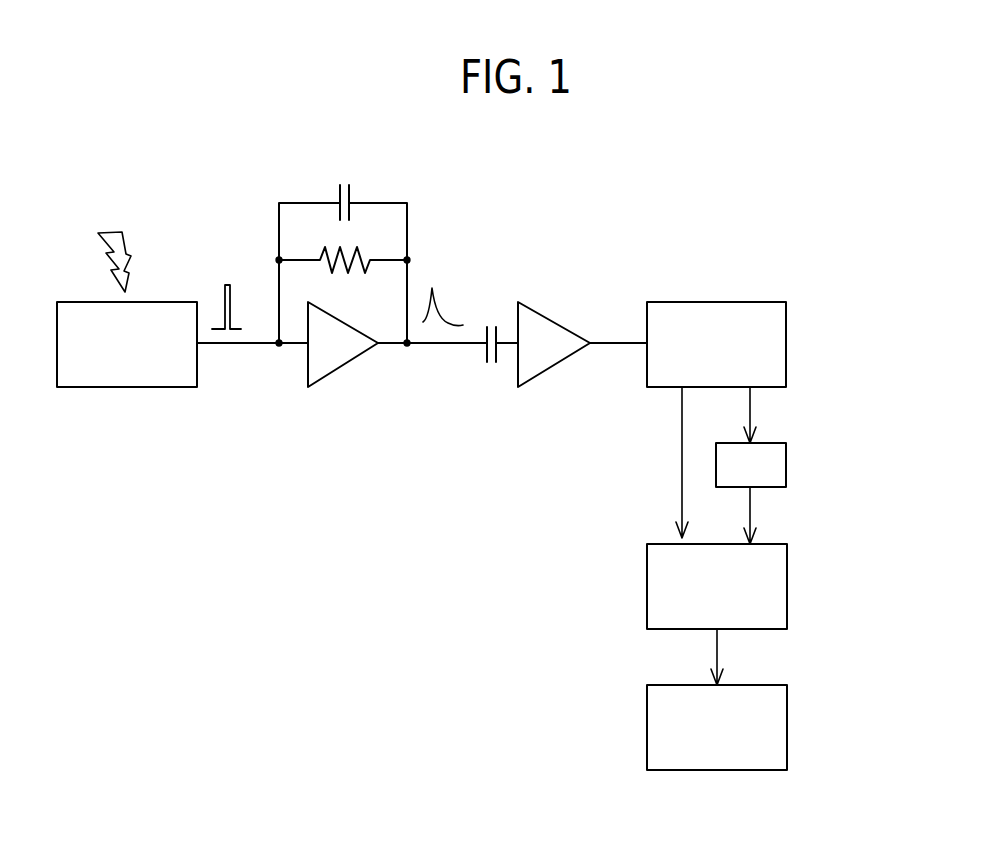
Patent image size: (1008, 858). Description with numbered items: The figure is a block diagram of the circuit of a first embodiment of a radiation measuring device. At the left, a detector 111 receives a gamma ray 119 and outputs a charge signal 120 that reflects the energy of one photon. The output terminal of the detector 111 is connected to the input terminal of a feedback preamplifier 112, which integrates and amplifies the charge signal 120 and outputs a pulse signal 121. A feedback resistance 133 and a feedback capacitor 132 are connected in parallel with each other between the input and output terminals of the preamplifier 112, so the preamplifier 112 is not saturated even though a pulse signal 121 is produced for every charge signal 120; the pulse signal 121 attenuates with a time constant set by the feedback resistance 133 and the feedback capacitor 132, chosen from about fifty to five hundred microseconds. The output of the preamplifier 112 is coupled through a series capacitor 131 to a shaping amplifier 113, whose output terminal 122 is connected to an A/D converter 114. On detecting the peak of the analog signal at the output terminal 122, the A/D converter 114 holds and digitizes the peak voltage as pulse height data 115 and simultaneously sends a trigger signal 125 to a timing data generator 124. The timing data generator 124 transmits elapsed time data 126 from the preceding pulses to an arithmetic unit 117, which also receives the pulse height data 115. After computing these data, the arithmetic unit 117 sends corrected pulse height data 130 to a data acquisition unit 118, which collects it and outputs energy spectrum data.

The detector 111 is at (145, 389).
The gamma ray 119 is at (113, 233).
The charge signal 120 is at (228, 282).
The preamplifier 112 is at (340, 373).
The feedback capacitor 132 is at (345, 182).
The feedback resistance 133 is at (360, 247).
The pulse signal 121 is at (442, 293).
The capacitor 131 is at (490, 365).
The shaping amplifier 113 is at (548, 370).
The output terminal 122 is at (608, 342).
The A/D converter 114 is at (787, 328).
The pulse height data 115 is at (680, 478).
The trigger signal 125 is at (752, 408).
The timing data generator 124 is at (787, 463).
The elapsed time data 126 is at (752, 510).
The arithmetic unit 117 is at (787, 570).
The corrected pulse height data 130 is at (720, 652).
The data acquisition unit 118 is at (787, 712).